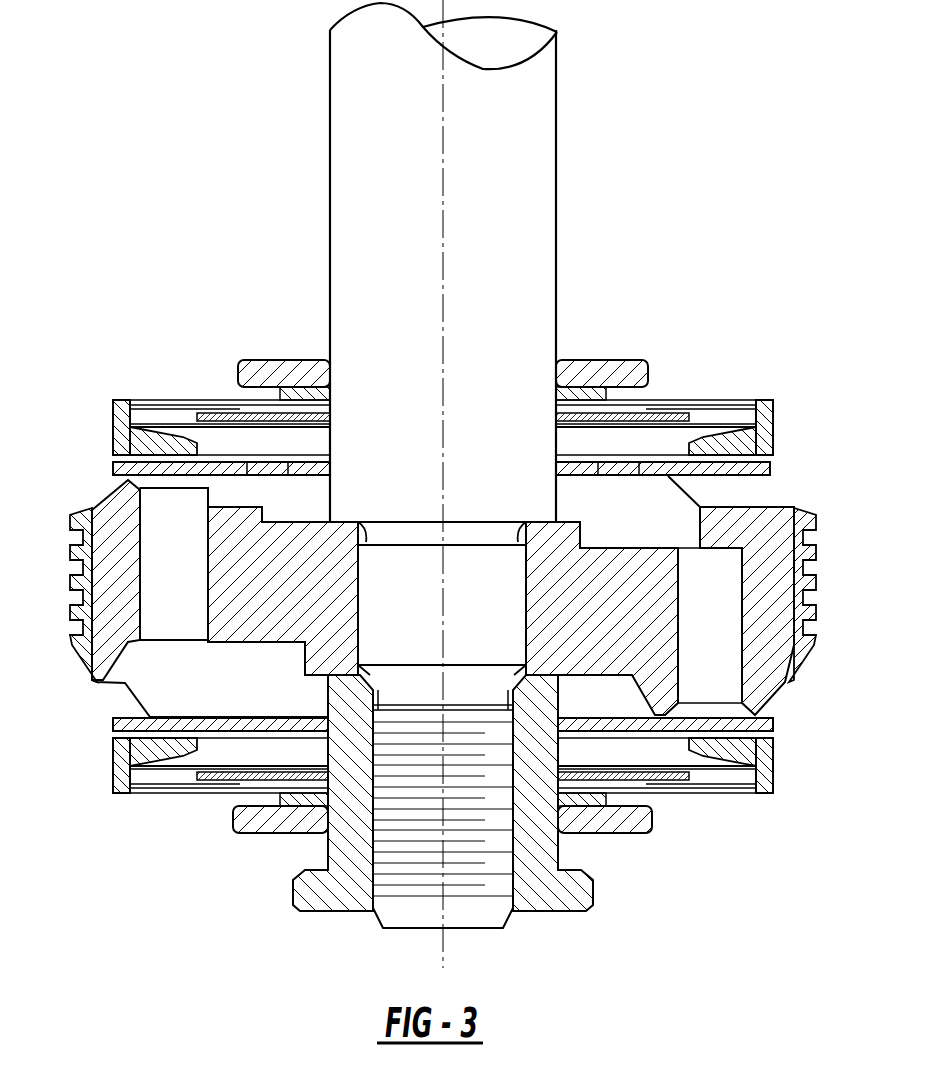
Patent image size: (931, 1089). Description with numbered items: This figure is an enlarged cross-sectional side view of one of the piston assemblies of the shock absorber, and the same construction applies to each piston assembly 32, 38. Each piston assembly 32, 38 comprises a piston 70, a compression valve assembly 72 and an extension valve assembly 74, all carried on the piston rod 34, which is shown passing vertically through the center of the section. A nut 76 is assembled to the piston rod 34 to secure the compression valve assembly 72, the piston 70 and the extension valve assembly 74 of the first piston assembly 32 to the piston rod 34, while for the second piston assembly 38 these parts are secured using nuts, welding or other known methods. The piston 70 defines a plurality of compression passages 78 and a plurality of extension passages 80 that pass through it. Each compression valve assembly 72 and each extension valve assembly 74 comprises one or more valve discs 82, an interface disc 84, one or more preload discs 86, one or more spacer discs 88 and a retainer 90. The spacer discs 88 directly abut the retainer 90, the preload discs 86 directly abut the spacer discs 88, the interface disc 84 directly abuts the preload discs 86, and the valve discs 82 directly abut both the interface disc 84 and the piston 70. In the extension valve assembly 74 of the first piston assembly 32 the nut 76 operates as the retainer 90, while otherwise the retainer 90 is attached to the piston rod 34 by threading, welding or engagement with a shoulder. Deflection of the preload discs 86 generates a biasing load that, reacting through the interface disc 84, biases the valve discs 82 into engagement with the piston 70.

The first piston assembly 32 is at (449, 589).
The second piston assembly 38 is at (200, 290).
The piston rod 34 is at (511, 174).
The piston 70 is at (765, 604).
The compression valve assembly 72 is at (750, 266).
The extension valve assembly 74 is at (238, 878).
The nut 76 is at (568, 897).
The compression passages 78 is at (170, 530).
The extension passages 80 is at (722, 667).
The valve discs 82 is at (775, 468).
The interface disc 84 is at (755, 442).
The preload discs 86 is at (660, 402).
The spacer discs 88 is at (598, 365).
The retainer 90 is at (240, 375).